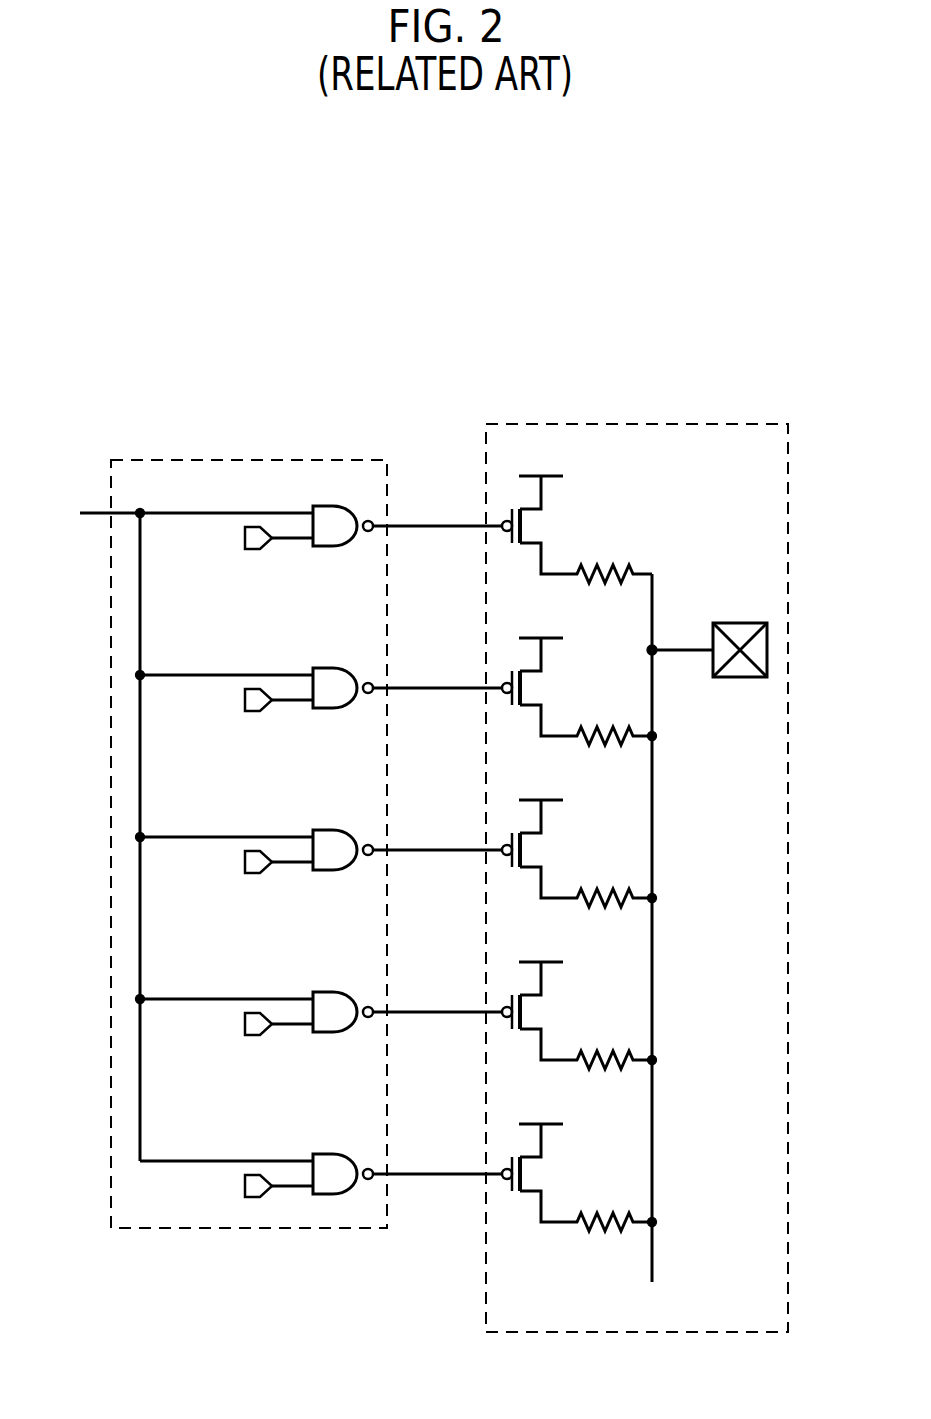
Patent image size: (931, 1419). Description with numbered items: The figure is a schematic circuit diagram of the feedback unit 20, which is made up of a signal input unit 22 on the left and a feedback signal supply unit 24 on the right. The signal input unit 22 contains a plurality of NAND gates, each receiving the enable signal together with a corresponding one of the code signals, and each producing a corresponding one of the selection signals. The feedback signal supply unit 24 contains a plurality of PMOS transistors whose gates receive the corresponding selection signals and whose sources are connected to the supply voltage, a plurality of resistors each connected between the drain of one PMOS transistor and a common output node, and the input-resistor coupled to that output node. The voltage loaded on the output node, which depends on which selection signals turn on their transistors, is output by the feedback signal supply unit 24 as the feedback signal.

The feedback unit 20 is at (452, 372).
The signal input unit 22 is at (330, 460).
The feedback signal supply unit 24 is at (735, 424).